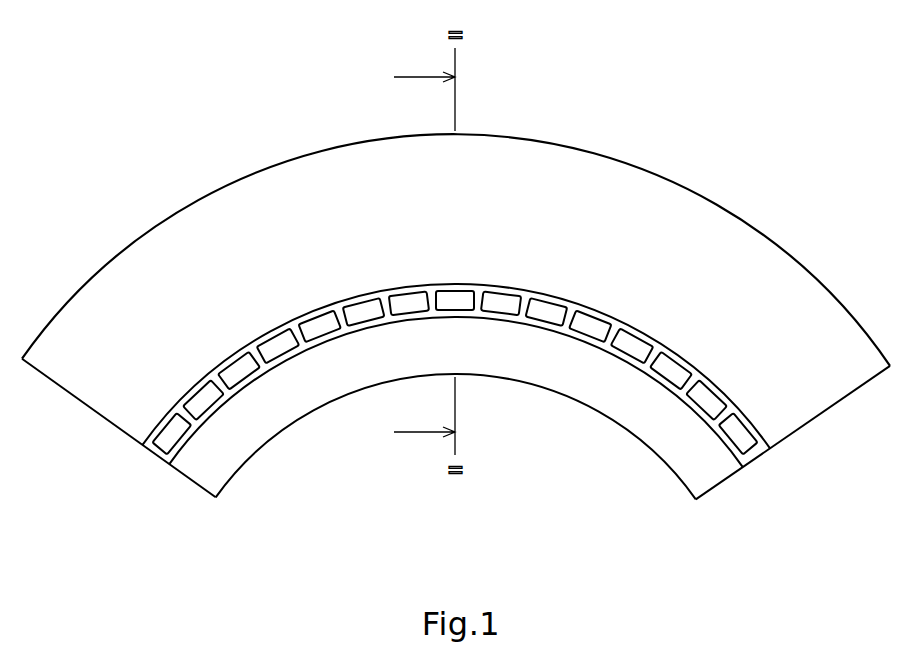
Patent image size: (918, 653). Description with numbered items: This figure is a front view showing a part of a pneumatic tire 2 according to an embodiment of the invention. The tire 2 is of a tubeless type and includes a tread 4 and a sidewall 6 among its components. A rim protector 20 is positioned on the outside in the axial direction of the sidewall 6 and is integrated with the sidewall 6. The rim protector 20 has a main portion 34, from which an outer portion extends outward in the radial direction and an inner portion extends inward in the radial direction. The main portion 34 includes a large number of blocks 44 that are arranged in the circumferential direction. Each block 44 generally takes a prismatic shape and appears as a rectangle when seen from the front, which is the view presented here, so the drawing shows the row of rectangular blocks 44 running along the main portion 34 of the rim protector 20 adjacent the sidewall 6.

The tire 2 is at (456, 316).
The tread 4 is at (243, 177).
The sidewall 6 is at (293, 218).
The rim protector 20 is at (481, 359).
The block 44 is at (632, 346).
The main portion 34 is at (763, 468).